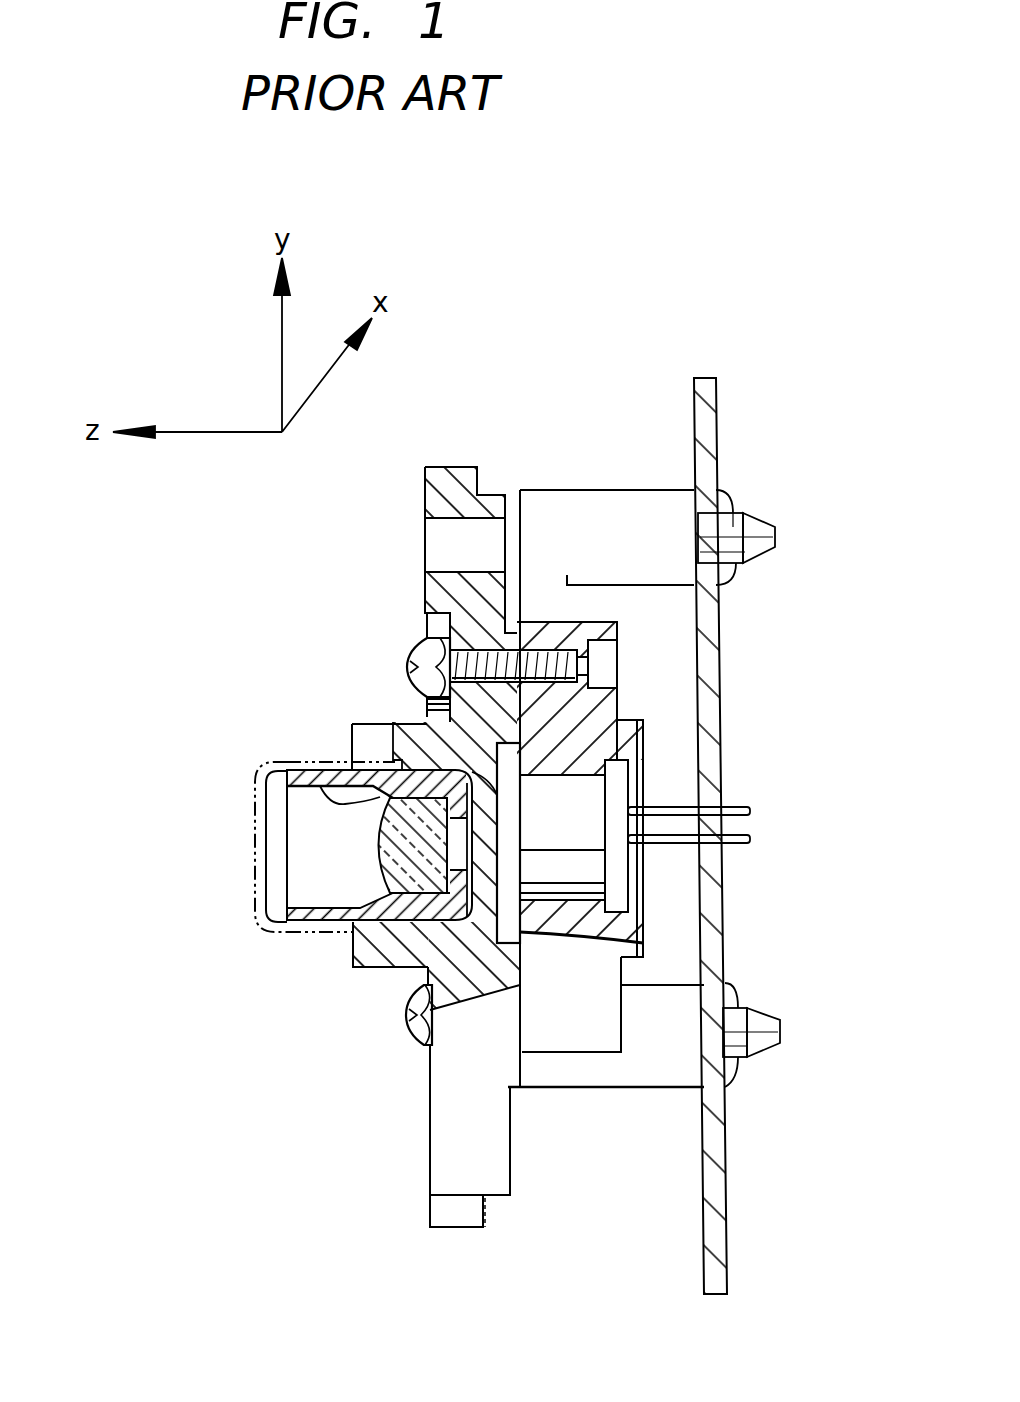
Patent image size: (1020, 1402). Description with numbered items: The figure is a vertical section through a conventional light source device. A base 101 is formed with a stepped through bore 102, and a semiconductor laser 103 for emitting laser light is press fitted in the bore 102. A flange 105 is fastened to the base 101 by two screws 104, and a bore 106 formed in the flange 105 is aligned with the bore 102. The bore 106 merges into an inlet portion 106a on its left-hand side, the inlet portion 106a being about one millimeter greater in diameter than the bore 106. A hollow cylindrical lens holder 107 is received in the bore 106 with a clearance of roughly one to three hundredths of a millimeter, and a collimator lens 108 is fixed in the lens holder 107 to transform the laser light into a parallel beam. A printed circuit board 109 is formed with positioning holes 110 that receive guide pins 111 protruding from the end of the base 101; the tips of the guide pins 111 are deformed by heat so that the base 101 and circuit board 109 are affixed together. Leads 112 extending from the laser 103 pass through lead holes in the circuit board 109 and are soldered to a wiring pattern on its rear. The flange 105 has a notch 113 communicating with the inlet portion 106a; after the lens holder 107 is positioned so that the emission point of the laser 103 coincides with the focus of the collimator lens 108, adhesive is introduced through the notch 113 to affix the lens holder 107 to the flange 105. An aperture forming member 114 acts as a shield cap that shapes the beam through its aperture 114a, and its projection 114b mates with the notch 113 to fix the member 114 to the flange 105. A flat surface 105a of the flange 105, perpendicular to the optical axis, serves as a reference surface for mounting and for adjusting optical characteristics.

The base 101 is at (582, 1033).
The stepped through bore 102 is at (565, 886).
The semiconductor laser 103 is at (580, 808).
The screws 104 is at (420, 650).
The flange 105 is at (432, 1170).
The flat surface 105a is at (426, 1108).
The bore 106 is at (542, 772).
The inlet portion 106a is at (317, 786).
The lens holder 107 is at (427, 918).
The collimator lens 108 is at (378, 834).
The printed circuit board 109 is at (727, 1143).
The positioning holes 110 is at (727, 557).
The guide pins 111 is at (757, 513).
The leads 112 is at (752, 836).
The notch 113 is at (378, 735).
The aperture forming member 114 is at (262, 768).
The aperture 114a is at (257, 853).
The projection 114b is at (375, 767).